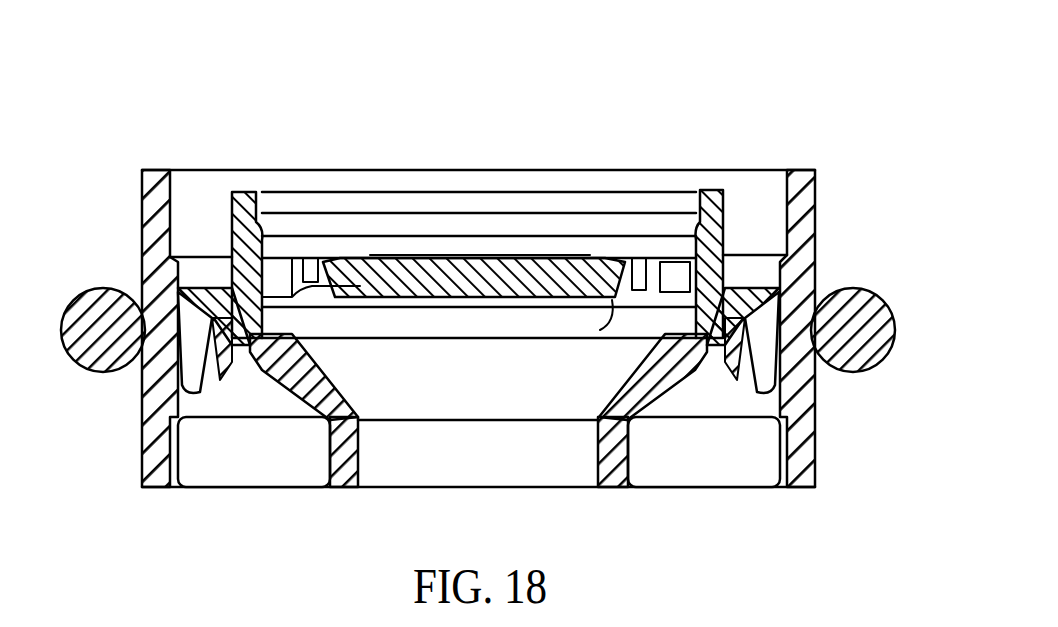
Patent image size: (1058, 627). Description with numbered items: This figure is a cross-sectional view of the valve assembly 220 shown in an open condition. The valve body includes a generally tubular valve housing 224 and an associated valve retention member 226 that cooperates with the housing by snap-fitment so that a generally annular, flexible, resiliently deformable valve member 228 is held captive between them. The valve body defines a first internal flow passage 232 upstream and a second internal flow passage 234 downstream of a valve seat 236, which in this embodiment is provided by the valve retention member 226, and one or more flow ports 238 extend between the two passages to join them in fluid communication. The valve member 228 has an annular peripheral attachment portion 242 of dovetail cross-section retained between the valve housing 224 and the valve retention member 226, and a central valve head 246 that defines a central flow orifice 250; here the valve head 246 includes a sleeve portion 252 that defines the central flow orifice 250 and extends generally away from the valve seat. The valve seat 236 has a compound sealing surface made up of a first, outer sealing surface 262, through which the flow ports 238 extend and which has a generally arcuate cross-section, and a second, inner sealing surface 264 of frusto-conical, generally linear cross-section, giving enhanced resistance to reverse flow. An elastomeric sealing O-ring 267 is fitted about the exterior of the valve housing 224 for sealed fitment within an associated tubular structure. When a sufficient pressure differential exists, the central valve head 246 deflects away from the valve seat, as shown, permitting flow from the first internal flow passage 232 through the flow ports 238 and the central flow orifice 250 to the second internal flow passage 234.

The valve assembly 220 is at (497, 292).
The valve housing 224 is at (818, 210).
The valve retention member 226 is at (716, 188).
The valve member 228 is at (662, 406).
The first internal flow passage 232 is at (272, 221).
The second internal flow passage 234 is at (249, 487).
The valve seat 236 is at (462, 276).
The flow ports 238 is at (298, 283).
The annular peripheral attachment portion 242 is at (214, 345).
The central valve head 246 is at (297, 395).
The central flow orifice 250 is at (360, 474).
The sleeve portion 252 is at (614, 479).
The first outer sealing surface 262 is at (652, 302).
The second inner sealing surface 264 is at (613, 302).
The elastomeric sealing O-ring 267 is at (855, 293).